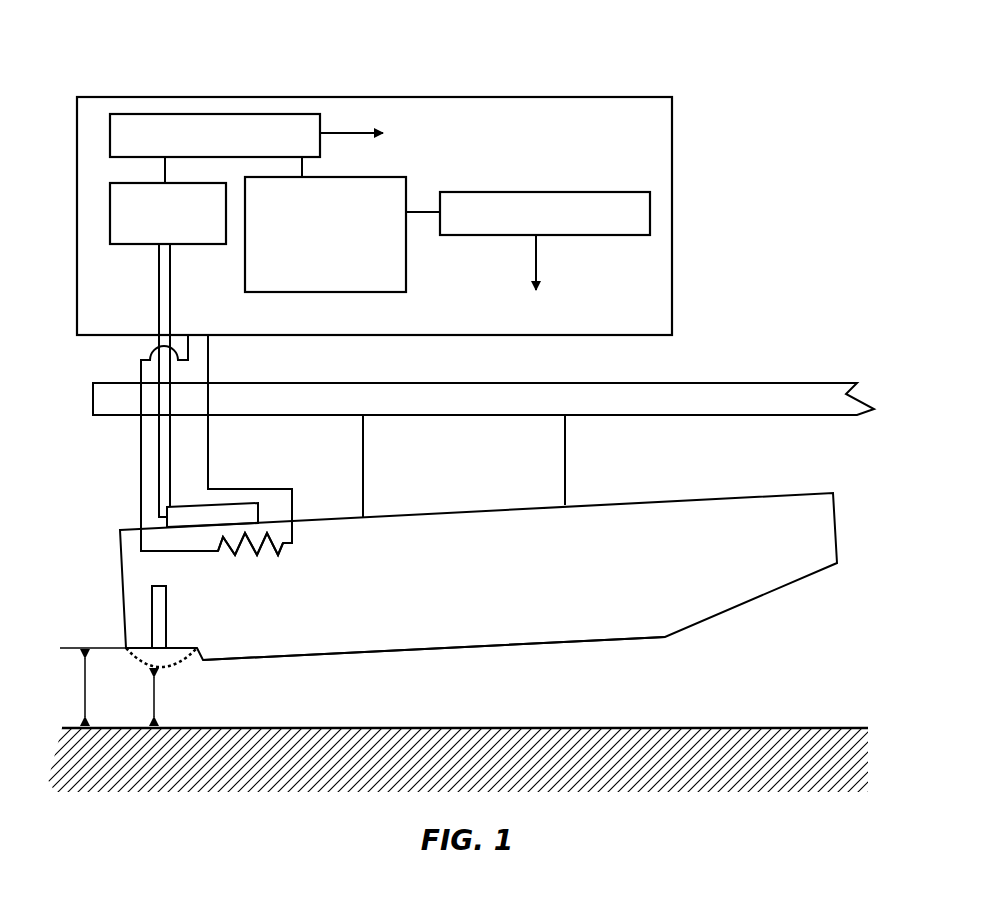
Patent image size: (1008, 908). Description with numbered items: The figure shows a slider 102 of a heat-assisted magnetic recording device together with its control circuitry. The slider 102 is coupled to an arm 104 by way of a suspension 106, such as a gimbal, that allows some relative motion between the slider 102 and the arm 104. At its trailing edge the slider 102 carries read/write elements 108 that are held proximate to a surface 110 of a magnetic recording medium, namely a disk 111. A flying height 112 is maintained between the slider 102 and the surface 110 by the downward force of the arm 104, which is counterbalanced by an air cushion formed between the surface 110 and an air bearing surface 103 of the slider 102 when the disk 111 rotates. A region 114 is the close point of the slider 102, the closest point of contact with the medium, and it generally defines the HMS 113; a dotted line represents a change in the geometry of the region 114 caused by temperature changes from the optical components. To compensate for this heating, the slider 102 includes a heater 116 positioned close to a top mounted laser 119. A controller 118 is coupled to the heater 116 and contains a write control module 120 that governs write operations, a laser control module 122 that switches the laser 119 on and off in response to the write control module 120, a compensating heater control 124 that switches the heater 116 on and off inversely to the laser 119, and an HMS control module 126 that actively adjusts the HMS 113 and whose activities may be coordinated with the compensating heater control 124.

The slider 102 is at (713, 507).
The air bearing surface 103 is at (503, 640).
The arm 104 is at (773, 390).
The suspension 106 is at (565, 455).
The read/write elements 108 is at (152, 628).
The surface 110 is at (718, 727).
The disk 111 is at (733, 777).
The flying height 112 is at (81, 682).
The HMS 113 is at (127, 697).
The region 114 is at (192, 683).
The heater 116 is at (272, 540).
The controller 118 is at (400, 97).
The laser 119 is at (217, 505).
The write control module 120 is at (213, 114).
The laser control module 122 is at (110, 222).
The compensating heater control 124 is at (383, 176).
The HMS control module 126 is at (650, 210).